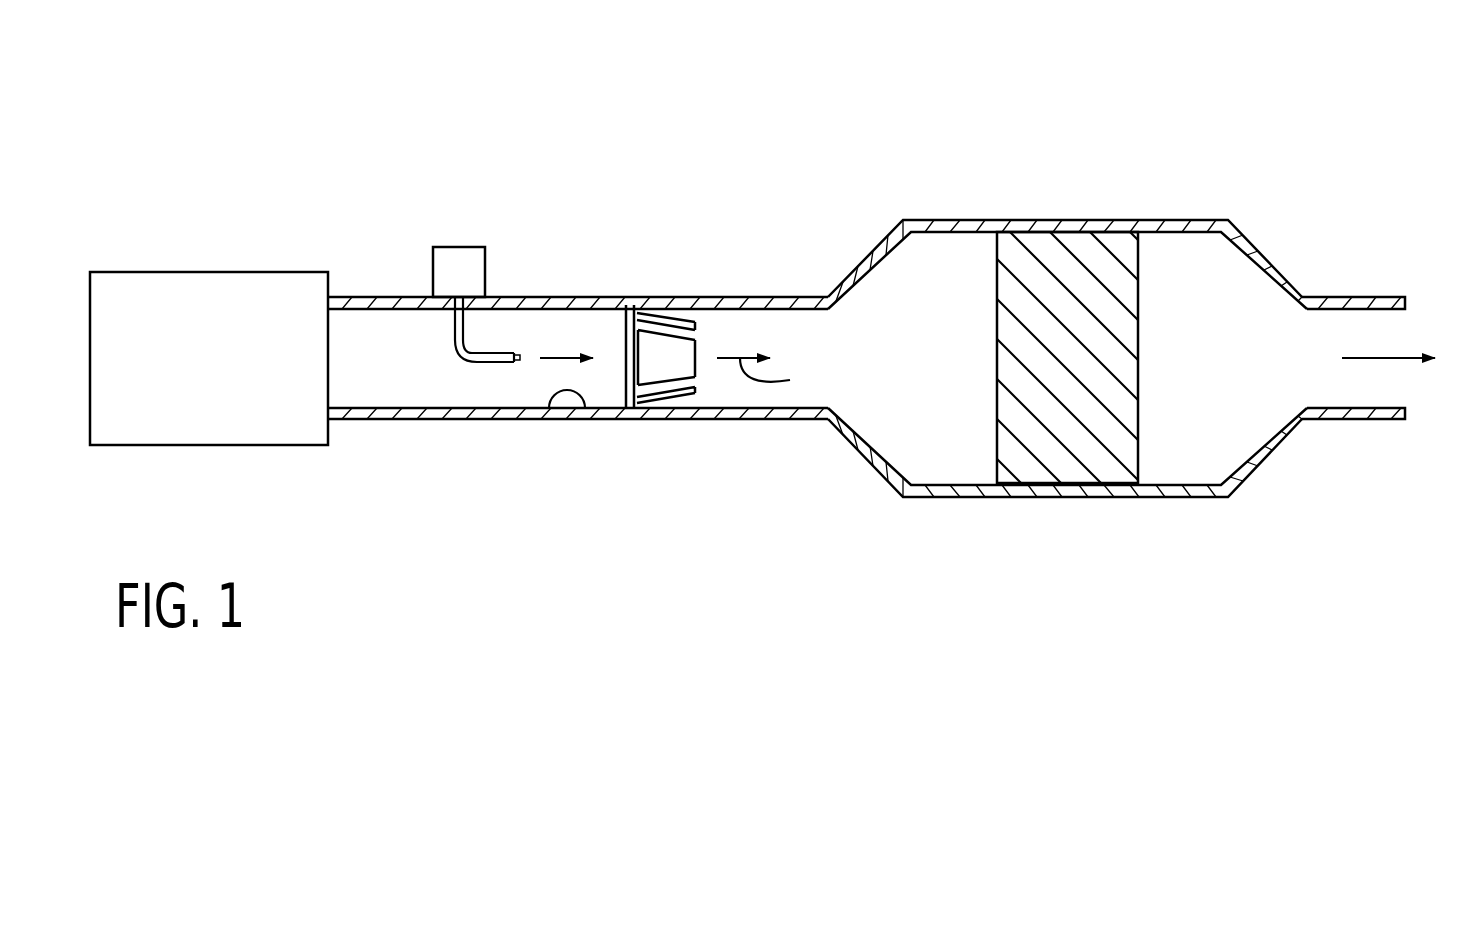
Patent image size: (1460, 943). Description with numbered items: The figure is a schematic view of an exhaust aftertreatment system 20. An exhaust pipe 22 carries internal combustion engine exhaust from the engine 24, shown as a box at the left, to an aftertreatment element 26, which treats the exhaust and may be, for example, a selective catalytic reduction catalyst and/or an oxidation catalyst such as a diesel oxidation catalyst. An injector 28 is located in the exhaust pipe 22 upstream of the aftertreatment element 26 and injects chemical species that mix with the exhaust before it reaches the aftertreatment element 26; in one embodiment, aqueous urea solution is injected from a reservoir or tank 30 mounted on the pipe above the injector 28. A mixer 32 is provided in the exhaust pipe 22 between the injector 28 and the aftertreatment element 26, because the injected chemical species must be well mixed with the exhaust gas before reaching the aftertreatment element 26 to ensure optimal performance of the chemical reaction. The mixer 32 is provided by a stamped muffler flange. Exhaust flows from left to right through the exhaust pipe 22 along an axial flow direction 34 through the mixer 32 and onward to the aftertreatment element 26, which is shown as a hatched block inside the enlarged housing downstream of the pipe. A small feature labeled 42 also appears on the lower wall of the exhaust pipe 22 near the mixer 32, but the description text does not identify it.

The exhaust aftertreatment system 20 is at (797, 147).
The exhaust pipe 22 is at (403, 420).
The engine 24 is at (207, 445).
The aftertreatment element 26 is at (1060, 458).
The injector 28 is at (515, 365).
The reservoir or tank 30 is at (458, 247).
The mixer 32 is at (627, 313).
The axial flow direction 34 is at (776, 377).
The sensor 42 is at (550, 409).